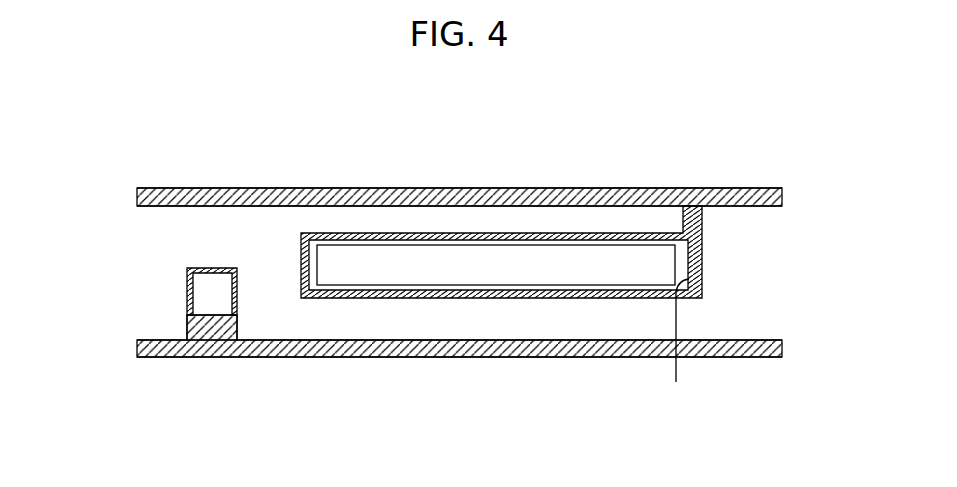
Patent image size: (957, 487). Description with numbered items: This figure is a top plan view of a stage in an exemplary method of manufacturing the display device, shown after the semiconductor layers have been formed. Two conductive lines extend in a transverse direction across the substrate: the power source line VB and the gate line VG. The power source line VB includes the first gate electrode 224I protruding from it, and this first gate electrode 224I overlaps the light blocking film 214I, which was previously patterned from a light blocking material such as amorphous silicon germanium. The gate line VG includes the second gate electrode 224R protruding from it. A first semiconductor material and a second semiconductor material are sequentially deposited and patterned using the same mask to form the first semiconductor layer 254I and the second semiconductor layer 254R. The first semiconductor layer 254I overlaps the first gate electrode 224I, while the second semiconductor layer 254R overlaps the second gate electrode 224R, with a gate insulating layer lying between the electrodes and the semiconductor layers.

The power source line VB is at (398, 187).
The gate line VG is at (416, 358).
The second semiconductor layer 254R is at (202, 318).
The second gate electrode 224R is at (237, 302).
The first gate electrode 224I is at (697, 250).
The light blocking film 214I is at (697, 275).
The first semiconductor layer 254I is at (674, 346).